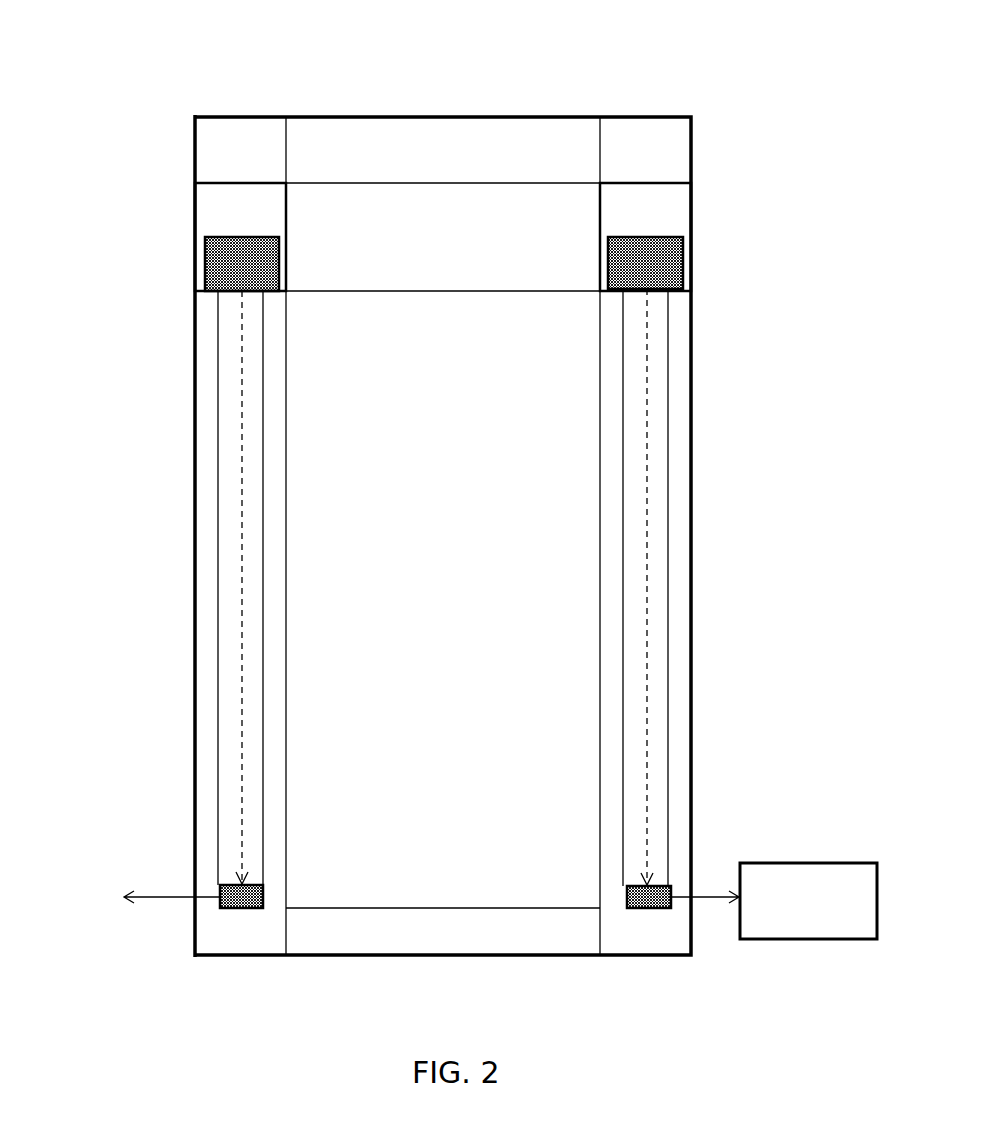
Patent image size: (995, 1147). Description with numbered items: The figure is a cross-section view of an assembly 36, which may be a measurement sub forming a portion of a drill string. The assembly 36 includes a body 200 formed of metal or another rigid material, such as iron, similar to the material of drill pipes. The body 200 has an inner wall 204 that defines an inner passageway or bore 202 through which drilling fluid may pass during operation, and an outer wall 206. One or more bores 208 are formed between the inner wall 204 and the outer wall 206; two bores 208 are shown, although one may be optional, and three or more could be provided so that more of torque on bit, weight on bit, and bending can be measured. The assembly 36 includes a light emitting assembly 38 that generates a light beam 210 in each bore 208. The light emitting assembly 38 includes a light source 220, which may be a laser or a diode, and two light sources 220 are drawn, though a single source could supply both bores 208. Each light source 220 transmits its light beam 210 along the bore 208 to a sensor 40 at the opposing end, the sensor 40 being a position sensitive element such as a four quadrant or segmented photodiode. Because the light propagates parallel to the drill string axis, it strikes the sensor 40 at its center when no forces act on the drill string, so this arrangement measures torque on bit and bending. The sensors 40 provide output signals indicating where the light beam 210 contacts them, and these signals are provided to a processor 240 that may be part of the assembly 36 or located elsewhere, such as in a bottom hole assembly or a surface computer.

The assembly 36 is at (154, 428).
The light emitting assembly 38 is at (195, 230).
The sensor 40 is at (220, 885).
The body 200 is at (195, 143).
The inner passageway or bore 202 is at (388, 355).
The inner wall 204 is at (297, 507).
The outer wall 206 is at (184, 534).
The bore 208 is at (253, 438).
The light beam 210 is at (242, 637).
The light source 220 is at (206, 263).
The processor 240 is at (808, 901).